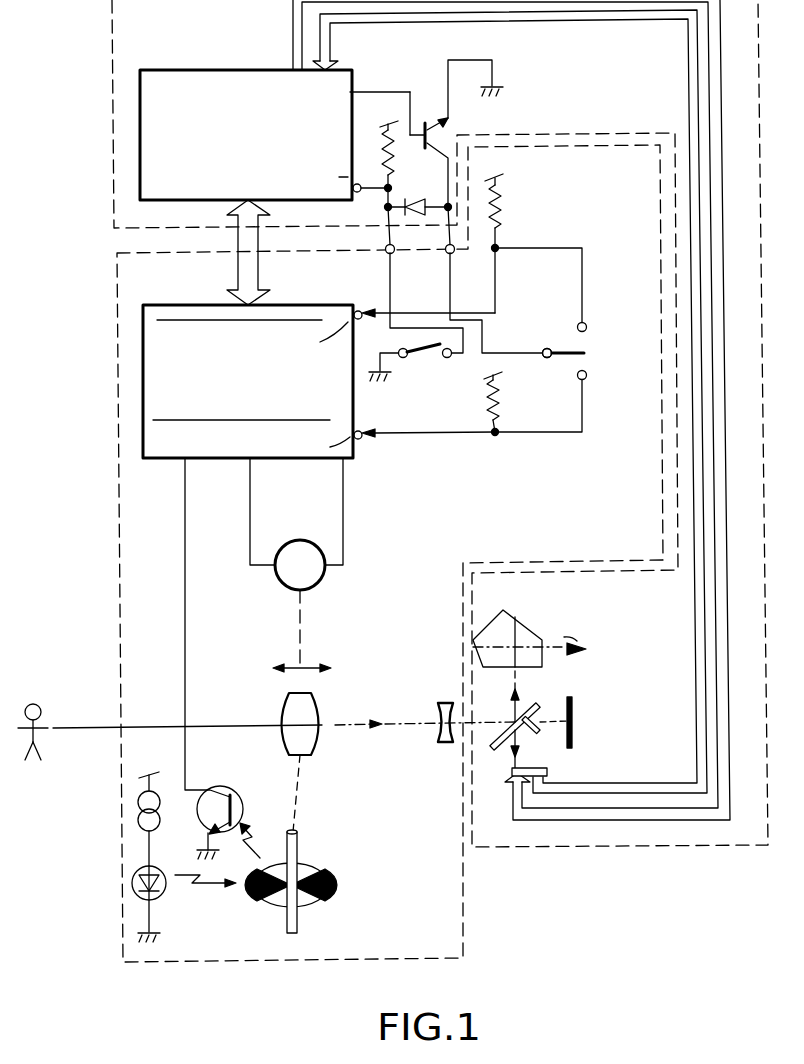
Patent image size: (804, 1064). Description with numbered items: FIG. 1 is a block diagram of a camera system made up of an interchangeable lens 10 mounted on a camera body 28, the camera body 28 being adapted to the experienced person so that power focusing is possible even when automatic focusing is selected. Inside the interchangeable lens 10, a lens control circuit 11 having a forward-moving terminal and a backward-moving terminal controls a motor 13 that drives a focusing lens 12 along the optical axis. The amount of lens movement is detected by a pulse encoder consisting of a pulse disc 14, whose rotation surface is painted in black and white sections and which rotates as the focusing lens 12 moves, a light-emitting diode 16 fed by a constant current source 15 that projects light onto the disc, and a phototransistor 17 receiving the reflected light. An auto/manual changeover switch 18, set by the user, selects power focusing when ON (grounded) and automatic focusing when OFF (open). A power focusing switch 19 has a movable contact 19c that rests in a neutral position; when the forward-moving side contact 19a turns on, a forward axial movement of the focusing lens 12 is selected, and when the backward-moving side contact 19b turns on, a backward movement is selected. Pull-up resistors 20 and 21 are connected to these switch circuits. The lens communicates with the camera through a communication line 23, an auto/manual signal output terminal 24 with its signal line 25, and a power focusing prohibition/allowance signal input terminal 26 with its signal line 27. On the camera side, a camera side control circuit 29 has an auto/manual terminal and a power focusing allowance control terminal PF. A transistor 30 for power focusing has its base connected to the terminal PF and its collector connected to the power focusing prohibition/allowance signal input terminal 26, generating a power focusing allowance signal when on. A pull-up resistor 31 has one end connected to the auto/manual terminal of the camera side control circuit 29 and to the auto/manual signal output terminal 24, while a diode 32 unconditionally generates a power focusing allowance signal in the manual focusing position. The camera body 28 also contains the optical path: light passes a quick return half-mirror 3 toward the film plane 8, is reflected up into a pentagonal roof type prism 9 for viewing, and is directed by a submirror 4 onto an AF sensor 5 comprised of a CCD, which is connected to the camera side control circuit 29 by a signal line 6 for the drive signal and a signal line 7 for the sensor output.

The quick return half-mirror 3 is at (522, 712).
The submirror 4 is at (536, 723).
The AF sensor 5 is at (512, 770).
The signal line for the AF sensor drive signal 6 is at (632, 814).
The signal line for the AF sensor output 7 is at (667, 785).
The film plane 8 is at (580, 743).
The pentagonal roof type prism 9 is at (505, 618).
The interchangeable lens 10 is at (232, 965).
The lens control circuit 11 is at (180, 305).
The focusing lens 12 is at (320, 706).
The motor 13 is at (322, 578).
The pulse disc 14 is at (330, 885).
The constant current source 15 is at (160, 825).
The light-emitting diode 16 is at (168, 896).
The phototransistor 17 is at (226, 790).
The auto/manual changeover switch 18 is at (426, 361).
The power focusing switch 19 is at (561, 362).
The forward-moving side contact 19a is at (588, 323).
The backward-moving side contact 19b is at (589, 380).
The movable contact 19c is at (553, 345).
The pull-up resistor 20 is at (499, 215).
The pull-up resistor 21 is at (486, 392).
The communication line 23 is at (259, 271).
The auto/manual signal output terminal 24 is at (385, 254).
The signal line 25 is at (392, 290).
The power focusing prohibition/allowance signal input terminal 26 is at (455, 258).
The signal line 27 is at (452, 306).
The camera body 28 is at (561, 848).
The camera side control circuit 29 is at (176, 70).
The transistor for power focusing 30 is at (444, 136).
The pull-up resistor 31 is at (384, 155).
The diode 32 is at (408, 198).